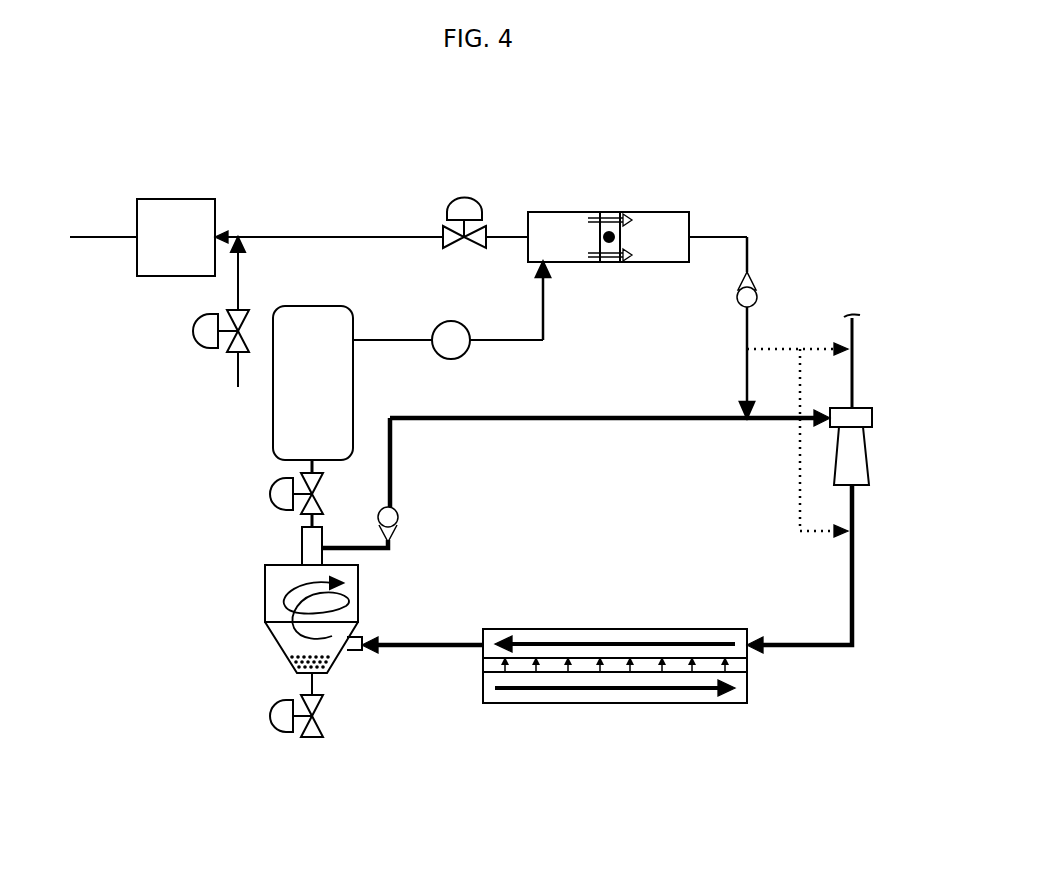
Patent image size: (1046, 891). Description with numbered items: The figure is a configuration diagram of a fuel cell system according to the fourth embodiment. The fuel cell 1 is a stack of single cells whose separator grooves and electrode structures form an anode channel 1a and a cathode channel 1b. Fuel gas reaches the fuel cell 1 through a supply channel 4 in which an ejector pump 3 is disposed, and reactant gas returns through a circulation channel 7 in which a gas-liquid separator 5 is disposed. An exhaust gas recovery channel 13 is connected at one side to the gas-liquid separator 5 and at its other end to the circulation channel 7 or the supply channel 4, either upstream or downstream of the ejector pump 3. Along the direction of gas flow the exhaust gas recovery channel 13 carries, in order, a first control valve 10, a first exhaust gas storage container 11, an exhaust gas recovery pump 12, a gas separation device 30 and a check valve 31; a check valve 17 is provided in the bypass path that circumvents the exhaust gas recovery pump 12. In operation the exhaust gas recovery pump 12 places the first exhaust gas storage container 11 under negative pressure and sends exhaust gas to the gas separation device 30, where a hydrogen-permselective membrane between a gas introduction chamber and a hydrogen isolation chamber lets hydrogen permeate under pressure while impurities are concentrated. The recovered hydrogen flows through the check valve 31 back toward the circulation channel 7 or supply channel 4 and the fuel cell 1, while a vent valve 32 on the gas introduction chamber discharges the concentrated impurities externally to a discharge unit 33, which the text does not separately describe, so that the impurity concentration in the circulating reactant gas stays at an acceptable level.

The fuel cell 1 is at (615, 663).
The anode channel 1a is at (562, 640).
The cathode channel 1b is at (560, 690).
The ejector pump 3 is at (876, 418).
The supply channel 4 is at (853, 608).
The gas-liquid separator 5 is at (265, 599).
The circulation channel 7 is at (601, 418).
The first control valve 10 is at (275, 492).
The first exhaust gas storage container 11 is at (353, 310).
The exhaust gas recovery pump 12 is at (466, 325).
The exhaust gas recovery channel 13 is at (406, 338).
The check valve 17 is at (399, 520).
The gas separation device 30 is at (565, 212).
The check valve 31 is at (762, 289).
The vent valve 32 is at (463, 200).
The exhaust treatment device 33 is at (176, 199).